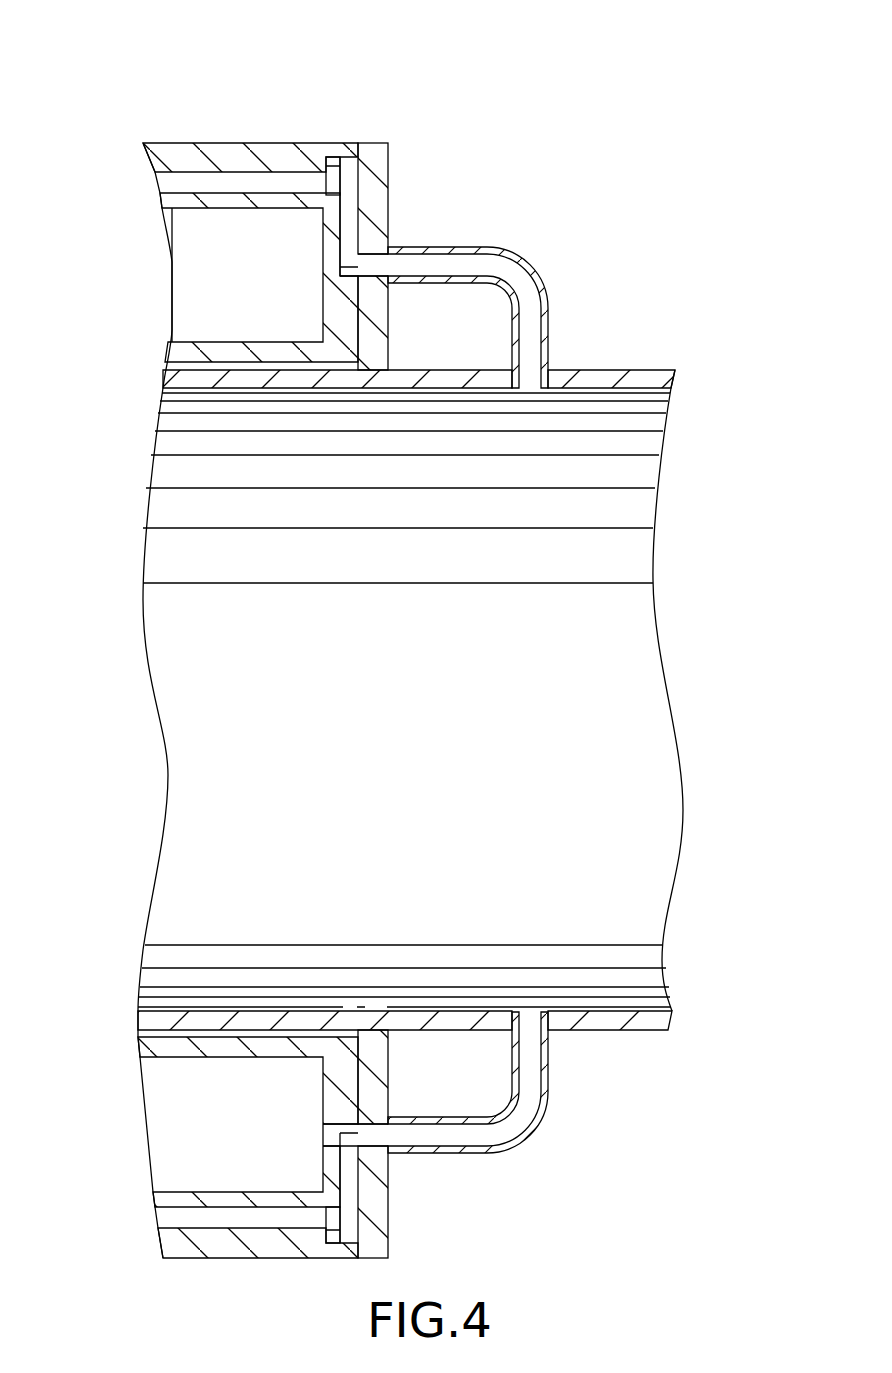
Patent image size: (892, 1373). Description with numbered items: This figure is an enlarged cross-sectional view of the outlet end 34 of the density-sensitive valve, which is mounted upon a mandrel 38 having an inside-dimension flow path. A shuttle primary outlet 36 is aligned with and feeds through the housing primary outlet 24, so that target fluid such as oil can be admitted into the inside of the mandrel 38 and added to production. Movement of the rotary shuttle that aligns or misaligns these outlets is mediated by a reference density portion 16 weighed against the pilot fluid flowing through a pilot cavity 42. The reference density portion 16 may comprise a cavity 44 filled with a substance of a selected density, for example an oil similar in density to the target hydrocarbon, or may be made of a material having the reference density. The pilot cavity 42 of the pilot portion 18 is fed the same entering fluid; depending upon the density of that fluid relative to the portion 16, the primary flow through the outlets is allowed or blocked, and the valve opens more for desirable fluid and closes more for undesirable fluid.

The outlet end 34 is at (375, 667).
The cavity 44 is at (175, 208).
The reference density portion 16 is at (250, 231).
The shuttle primary outlet 36 is at (338, 226).
The housing primary outlet 24 is at (383, 267).
The mandrel 38 is at (598, 378).
The pilot cavity 42 is at (185, 1057).
The pilot portion 18 is at (178, 1160).